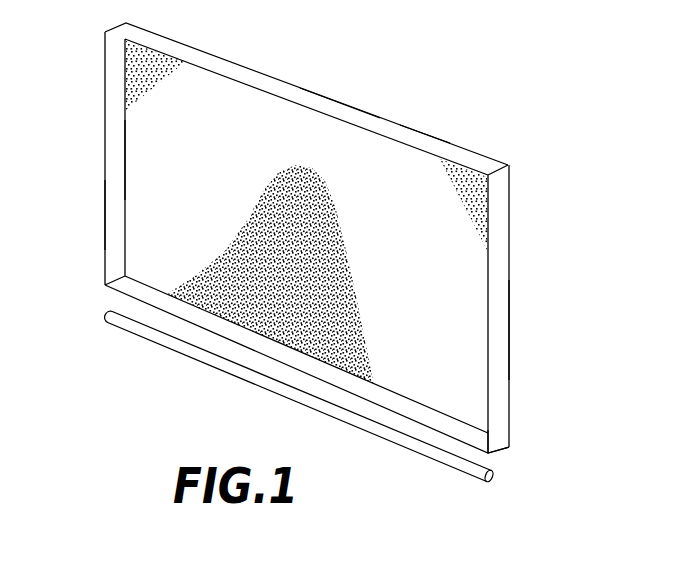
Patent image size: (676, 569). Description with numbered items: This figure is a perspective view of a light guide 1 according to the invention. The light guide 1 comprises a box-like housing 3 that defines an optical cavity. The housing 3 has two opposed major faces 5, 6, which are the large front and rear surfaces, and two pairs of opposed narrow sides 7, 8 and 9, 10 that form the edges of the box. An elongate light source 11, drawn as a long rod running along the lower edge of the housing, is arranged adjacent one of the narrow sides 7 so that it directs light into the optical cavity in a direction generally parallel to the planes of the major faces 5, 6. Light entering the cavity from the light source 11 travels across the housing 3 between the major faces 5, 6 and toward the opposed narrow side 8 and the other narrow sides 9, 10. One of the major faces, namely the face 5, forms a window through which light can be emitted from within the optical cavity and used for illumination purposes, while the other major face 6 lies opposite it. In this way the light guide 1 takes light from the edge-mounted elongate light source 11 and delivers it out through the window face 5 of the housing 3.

The light guide 1 is at (511, 139).
The box-like housing 3 is at (513, 261).
The major face 5 is at (120, 162).
The major face 6 is at (453, 143).
The narrow side 7 is at (503, 450).
The narrow side 8 is at (383, 120).
The narrow side 9 is at (505, 338).
The narrow side 10 is at (103, 206).
The elongate light source 11 is at (438, 459).